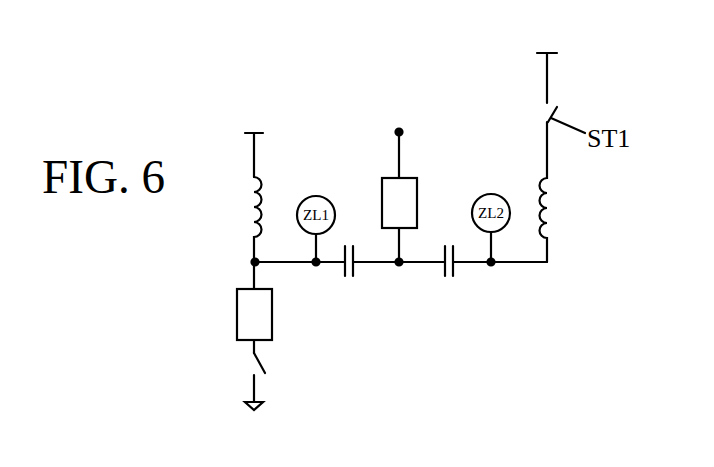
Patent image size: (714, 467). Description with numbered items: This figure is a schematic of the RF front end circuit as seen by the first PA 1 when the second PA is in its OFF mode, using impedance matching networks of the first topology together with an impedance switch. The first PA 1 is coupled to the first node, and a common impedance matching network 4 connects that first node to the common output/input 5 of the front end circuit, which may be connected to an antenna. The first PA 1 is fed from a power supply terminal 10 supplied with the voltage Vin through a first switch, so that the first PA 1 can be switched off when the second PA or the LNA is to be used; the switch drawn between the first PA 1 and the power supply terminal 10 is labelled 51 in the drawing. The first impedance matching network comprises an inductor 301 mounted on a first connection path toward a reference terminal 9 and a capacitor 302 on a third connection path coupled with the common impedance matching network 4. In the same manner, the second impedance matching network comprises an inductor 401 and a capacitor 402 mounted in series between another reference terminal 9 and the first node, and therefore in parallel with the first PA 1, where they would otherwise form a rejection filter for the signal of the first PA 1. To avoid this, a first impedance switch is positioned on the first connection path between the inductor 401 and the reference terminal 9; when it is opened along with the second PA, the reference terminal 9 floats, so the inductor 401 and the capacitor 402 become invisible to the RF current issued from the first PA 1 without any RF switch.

The reference terminal 9 is at (245, 133).
The inductor 301 is at (262, 183).
The inductor 401 is at (540, 181).
The capacitor 302 is at (345, 276).
The capacitor 402 is at (445, 276).
The common impedance matching network 4 is at (417, 192).
The common output/input 5 is at (399, 132).
The first PA 1 is at (236, 315).
The switch 51 is at (262, 367).
The power supply terminal 10 is at (258, 405).